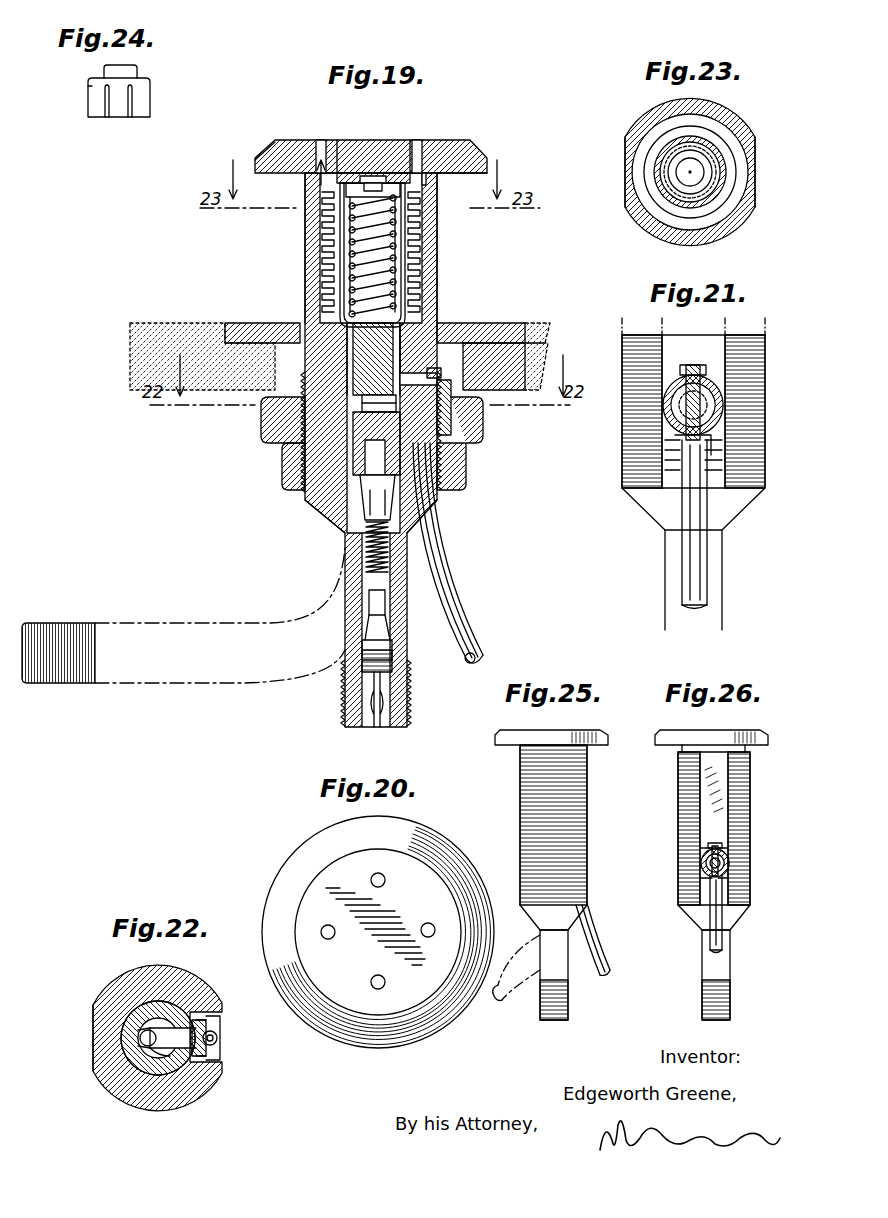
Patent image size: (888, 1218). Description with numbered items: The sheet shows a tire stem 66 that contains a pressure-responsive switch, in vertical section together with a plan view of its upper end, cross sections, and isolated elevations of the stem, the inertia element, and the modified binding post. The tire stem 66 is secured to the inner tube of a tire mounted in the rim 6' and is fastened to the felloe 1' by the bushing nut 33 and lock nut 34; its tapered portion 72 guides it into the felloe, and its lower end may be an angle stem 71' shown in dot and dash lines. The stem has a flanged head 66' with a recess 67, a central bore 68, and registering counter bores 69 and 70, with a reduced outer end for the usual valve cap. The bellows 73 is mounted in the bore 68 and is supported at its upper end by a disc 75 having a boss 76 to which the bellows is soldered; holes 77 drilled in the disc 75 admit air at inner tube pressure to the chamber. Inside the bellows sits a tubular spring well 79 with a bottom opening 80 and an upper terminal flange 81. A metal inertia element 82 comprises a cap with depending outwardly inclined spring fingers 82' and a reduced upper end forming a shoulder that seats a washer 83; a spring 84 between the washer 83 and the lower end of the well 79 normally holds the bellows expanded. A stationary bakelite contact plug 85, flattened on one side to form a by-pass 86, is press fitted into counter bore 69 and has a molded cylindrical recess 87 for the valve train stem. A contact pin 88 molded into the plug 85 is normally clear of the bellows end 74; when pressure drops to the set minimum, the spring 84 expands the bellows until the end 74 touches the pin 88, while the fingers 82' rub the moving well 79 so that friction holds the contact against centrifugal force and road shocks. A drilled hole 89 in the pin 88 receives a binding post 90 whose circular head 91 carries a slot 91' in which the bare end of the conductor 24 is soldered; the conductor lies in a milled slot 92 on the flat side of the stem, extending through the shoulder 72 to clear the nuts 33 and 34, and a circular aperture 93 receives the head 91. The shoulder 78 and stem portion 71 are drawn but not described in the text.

In FIG. 19, the felloe 1' is at (505, 384).
In FIG. 19, the rim 6' is at (493, 315).
In FIG. 19, the conductor 24 is at (456, 582).
In FIG. 21, the conductor 24 is at (690, 557).
In FIG. 22, the conductor 24 is at (217, 1040).
In FIG. 25, the conductor 24 is at (590, 950).
In FIG. 26, the conductor 24 is at (722, 946).
In FIG. 19, the bushing nut 33 is at (262, 420).
In FIG. 19, the lock nut 34 is at (286, 470).
In FIG. 19, the tire stem 66 is at (389, 450).
In FIG. 23, the tire stem 66 is at (692, 168).
In FIG. 21, the tire stem 66 is at (676, 403).
In FIG. 22, the tire stem 66 is at (157, 1049).
In FIG. 25, the tire stem 66 is at (538, 825).
In FIG. 26, the tire stem 66 is at (699, 825).
In FIG. 19, the flanged head 66' is at (385, 142).
In FIG. 20, the flanged head 66' is at (374, 932).
In FIG. 25, the flanged head 66' is at (564, 723).
In FIG. 26, the flanged head 66' is at (719, 723).
In FIG. 19, the recess 67 is at (273, 140).
In FIG. 19, the central bore 68 is at (316, 185).
In FIG. 19, the counter bore 69 is at (393, 484).
In FIG. 19, the counter bore 70 is at (390, 545).
In FIG. 19, the stem 71 is at (397, 658).
In FIG. 21, the stem 71 is at (676, 580).
In FIG. 25, the stem 71 is at (571, 975).
In FIG. 26, the stem 71 is at (733, 975).
In FIG. 19, the angle stem 71' is at (183, 615).
In FIG. 25, the angle stem 71' is at (516, 981).
In FIG. 19, the tapered portion 72 is at (322, 508).
In FIG. 21, the tapered portion 72 is at (650, 510).
In FIG. 25, the tapered portion 72 is at (540, 918).
In FIG. 26, the tapered portion 72 is at (692, 918).
In FIG. 19, the bellows 73 is at (325, 262).
In FIG. 23, the bellows 73 is at (656, 150).
In FIG. 19, the bellows end 74 is at (345, 330).
In FIG. 19, the disc 75 is at (390, 142).
In FIG. 20, the disc 75 is at (418, 872).
In FIG. 19, the boss 76 is at (426, 172).
In FIG. 19, the holes 77 is at (418, 142).
In FIG. 20, the holes 77 is at (372, 978).
In FIG. 19, the shoulder 78 is at (430, 168).
In FIG. 19, the spring well 79 is at (406, 278).
In FIG. 23, the spring well 79 is at (660, 180).
In FIG. 19, the bottom opening 80 is at (396, 320).
In FIG. 23, the bottom opening 80 is at (700, 178).
In FIG. 19, the upper terminal flange 81 is at (400, 175).
In FIG. 19, the inertia element 82 is at (406, 196).
In FIG. 24, the inertia element 82 is at (140, 91).
In FIG. 19, the spring fingers 82' is at (328, 254).
In FIG. 23, the spring fingers 82' is at (656, 189).
In FIG. 24, the spring fingers 82' is at (147, 101).
In FIG. 19, the washer 83 is at (366, 186).
In FIG. 19, the spring 84 is at (350, 270).
In FIG. 23, the spring 84 is at (712, 196).
In FIG. 19, the contact plug 85 is at (410, 345).
In FIG. 22, the contact plug 85 is at (140, 1046).
In FIG. 19, the by-pass 86 is at (352, 362).
In FIG. 22, the by-pass 86 is at (150, 1038).
In FIG. 19, the cylindrical recess 87 is at (372, 456).
In FIG. 19, the contact pin 88 is at (240, 345).
In FIG. 22, the contact pin 88 is at (148, 1060).
In FIG. 19, the drilled hole 89 is at (372, 404).
In FIG. 22, the drilled hole 89 is at (148, 1040).
In FIG. 19, the binding post 90 is at (356, 436).
In FIG. 22, the binding post 90 is at (160, 1056).
In FIG. 19, the circular head 91 is at (479, 409).
In FIG. 21, the circular head 91 is at (736, 406).
In FIG. 22, the circular head 91 is at (218, 1003).
In FIG. 26, the circular head 91 is at (749, 857).
In FIG. 19, the slot 91' is at (499, 349).
In FIG. 21, the slot 91' is at (693, 380).
In FIG. 22, the slot 91' is at (245, 1056).
In FIG. 26, the slot 91' is at (683, 851).
In FIG. 19, the milled slot 92 is at (470, 440).
In FIG. 21, the milled slot 92 is at (680, 438).
In FIG. 22, the milled slot 92 is at (218, 1030).
In FIG. 26, the milled slot 92 is at (722, 880).
In FIG. 19, the circular aperture 93 is at (422, 377).
In FIG. 21, the circular aperture 93 is at (665, 390).
In FIG. 22, the circular aperture 93 is at (185, 1062).
In FIG. 26, the circular aperture 93 is at (700, 863).